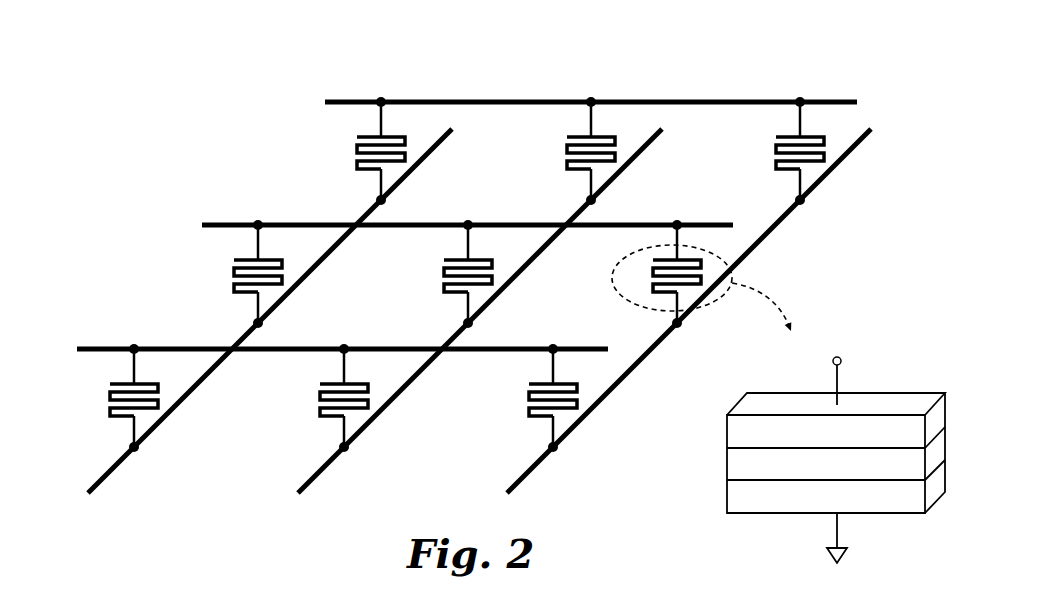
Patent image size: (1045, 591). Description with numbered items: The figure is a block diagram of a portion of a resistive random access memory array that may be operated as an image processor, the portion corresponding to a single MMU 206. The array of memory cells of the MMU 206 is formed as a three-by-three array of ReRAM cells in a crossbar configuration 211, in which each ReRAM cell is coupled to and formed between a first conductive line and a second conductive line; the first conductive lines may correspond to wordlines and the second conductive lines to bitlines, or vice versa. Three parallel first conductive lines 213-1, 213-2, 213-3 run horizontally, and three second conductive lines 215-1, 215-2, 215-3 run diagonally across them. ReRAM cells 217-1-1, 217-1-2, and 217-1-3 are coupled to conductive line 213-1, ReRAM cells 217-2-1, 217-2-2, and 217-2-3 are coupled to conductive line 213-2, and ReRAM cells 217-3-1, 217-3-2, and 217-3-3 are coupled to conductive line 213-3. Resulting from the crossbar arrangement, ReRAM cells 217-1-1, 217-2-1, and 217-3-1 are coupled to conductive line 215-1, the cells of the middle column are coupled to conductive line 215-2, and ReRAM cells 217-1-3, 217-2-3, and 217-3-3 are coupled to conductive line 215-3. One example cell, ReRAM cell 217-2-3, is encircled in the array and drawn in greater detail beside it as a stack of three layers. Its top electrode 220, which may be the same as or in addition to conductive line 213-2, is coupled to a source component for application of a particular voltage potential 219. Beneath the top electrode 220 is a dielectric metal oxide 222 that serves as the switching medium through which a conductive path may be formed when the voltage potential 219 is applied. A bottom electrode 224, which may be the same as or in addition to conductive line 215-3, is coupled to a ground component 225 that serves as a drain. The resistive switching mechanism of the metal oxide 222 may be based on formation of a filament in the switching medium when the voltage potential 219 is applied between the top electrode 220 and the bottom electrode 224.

The MMU 206 is at (106, 33).
The crossbar configuration 211 is at (153, 163).
The first conductive line 213-1 is at (354, 99).
The first conductive line 213-2 is at (232, 224).
The first conductive line 213-3 is at (107, 348).
The second conductive line 215-1 is at (112, 471).
The second conductive line 215-2 is at (321, 471).
The second conductive line 215-3 is at (520, 479).
The ReRAM cell 217-1-1 is at (357, 148).
The ReRAM cell 217-1-2 is at (565, 148).
The ReRAM cell 217-1-3 is at (774, 148).
The ReRAM cell 217-2-1 is at (232, 272).
The ReRAM cell 217-2-2 is at (442, 272).
The ReRAM cell 217-2-3 is at (640, 305).
The ReRAM cell 217-3-1 is at (120, 424).
The ReRAM cell 217-3-2 is at (318, 397).
The ReRAM cell 217-3-3 is at (528, 397).
The voltage potential 219 is at (832, 362).
The top electrode 220 is at (737, 432).
The dielectric metal oxide 222 is at (737, 465).
The bottom electrode 224 is at (737, 497).
The ground component 225 is at (842, 556).